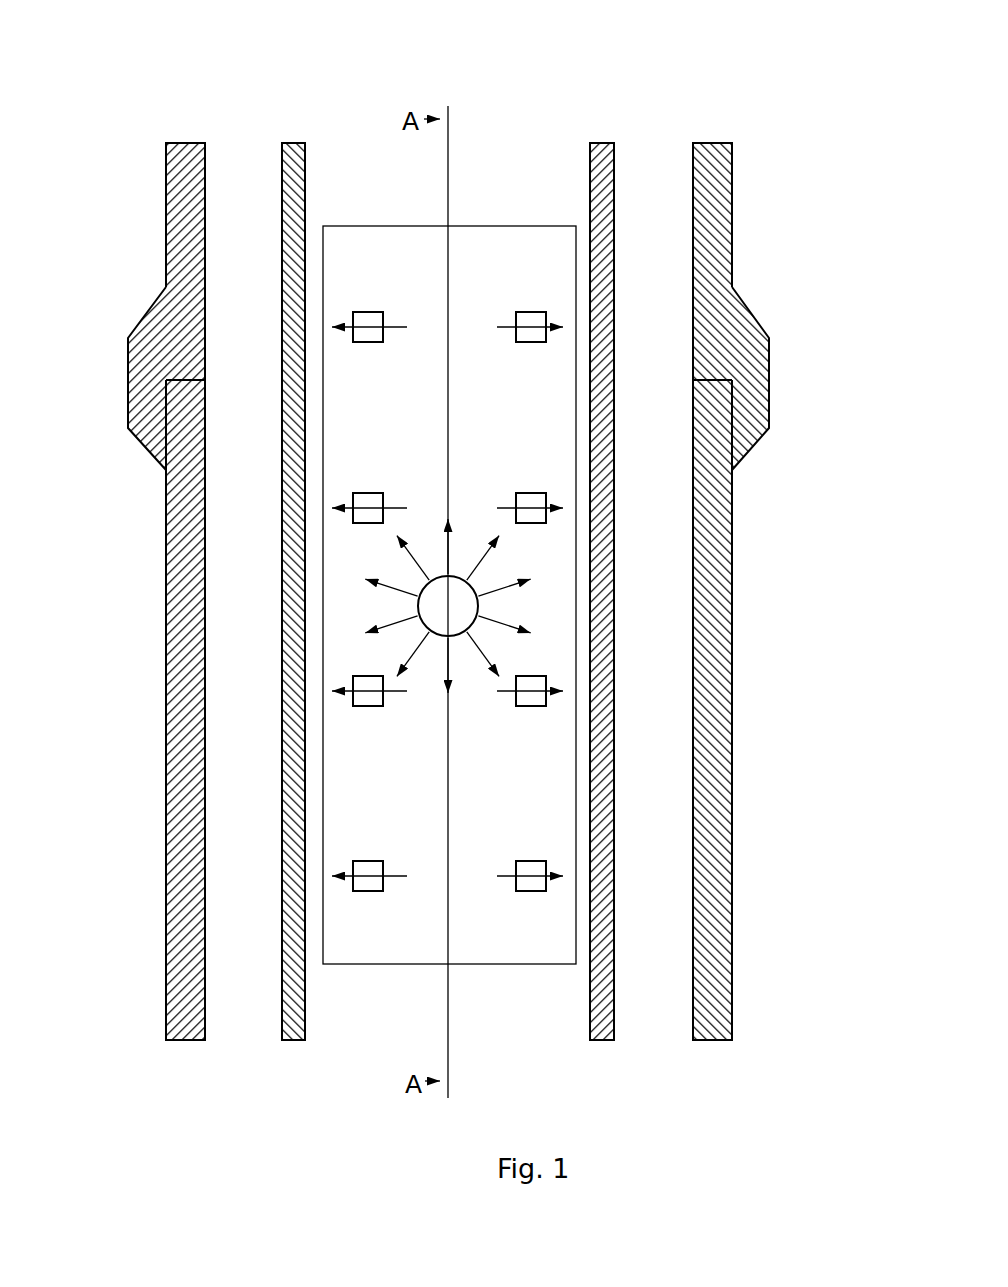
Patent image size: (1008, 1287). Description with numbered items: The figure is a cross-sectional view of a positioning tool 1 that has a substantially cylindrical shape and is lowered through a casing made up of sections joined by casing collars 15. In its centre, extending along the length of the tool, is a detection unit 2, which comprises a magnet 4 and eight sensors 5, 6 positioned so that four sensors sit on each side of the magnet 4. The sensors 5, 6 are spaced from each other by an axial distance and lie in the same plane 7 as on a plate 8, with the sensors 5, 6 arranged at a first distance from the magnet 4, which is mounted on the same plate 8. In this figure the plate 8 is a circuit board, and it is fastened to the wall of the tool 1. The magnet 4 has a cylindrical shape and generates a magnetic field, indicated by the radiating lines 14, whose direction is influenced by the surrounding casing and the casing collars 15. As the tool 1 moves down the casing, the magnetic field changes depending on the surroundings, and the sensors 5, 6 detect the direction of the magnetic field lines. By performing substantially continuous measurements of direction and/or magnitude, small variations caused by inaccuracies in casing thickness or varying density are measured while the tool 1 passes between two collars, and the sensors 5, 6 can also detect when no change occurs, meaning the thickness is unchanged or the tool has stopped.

The positioning tool 1 is at (345, 107).
The detection unit 2 is at (525, 237).
The magnet 4 is at (468, 612).
The sensor 5 is at (520, 878).
The sensor 6 is at (520, 693).
The plane 7 is at (562, 783).
The plate 8 is at (523, 942).
The emitted radiation 14 is at (527, 582).
The casing collar 15 is at (168, 347).